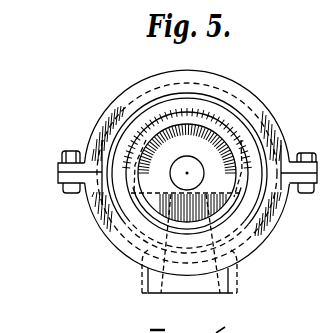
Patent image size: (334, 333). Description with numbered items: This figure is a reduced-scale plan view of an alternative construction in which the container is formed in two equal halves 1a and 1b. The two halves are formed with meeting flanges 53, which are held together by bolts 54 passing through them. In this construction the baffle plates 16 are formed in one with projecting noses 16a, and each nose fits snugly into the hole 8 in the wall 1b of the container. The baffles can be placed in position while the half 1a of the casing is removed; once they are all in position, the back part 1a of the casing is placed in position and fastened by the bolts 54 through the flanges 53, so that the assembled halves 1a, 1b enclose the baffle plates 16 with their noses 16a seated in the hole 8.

The half of the container 1a is at (222, 82).
The half of the container 1b is at (270, 232).
The baffle plate 16 is at (239, 135).
The projecting nose 16a is at (148, 289).
The hole 8 is at (238, 280).
The meeting flange 53 is at (63, 183).
The bolt 54 is at (304, 194).